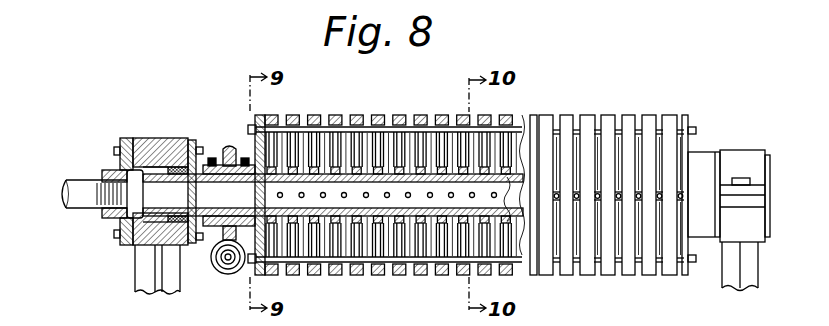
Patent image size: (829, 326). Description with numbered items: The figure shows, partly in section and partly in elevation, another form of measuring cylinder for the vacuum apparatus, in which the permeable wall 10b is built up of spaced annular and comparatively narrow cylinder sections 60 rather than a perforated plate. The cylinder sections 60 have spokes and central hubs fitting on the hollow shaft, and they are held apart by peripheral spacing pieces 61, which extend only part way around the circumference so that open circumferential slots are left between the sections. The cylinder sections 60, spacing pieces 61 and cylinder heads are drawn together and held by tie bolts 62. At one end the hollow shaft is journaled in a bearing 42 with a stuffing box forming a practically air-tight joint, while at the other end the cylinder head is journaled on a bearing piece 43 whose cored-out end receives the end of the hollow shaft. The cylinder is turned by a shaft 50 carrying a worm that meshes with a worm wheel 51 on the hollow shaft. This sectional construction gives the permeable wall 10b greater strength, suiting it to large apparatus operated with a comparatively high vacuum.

The bearing 42 is at (154, 158).
The worm wheel 51 is at (228, 145).
The shaft 50 is at (221, 270).
The cylinder sections 60 is at (356, 115).
The peripheral spacing pieces 61 is at (363, 276).
The tie bolts 62 is at (407, 127).
The permeable wall 10b is at (567, 115).
The bearing piece 43 is at (715, 154).